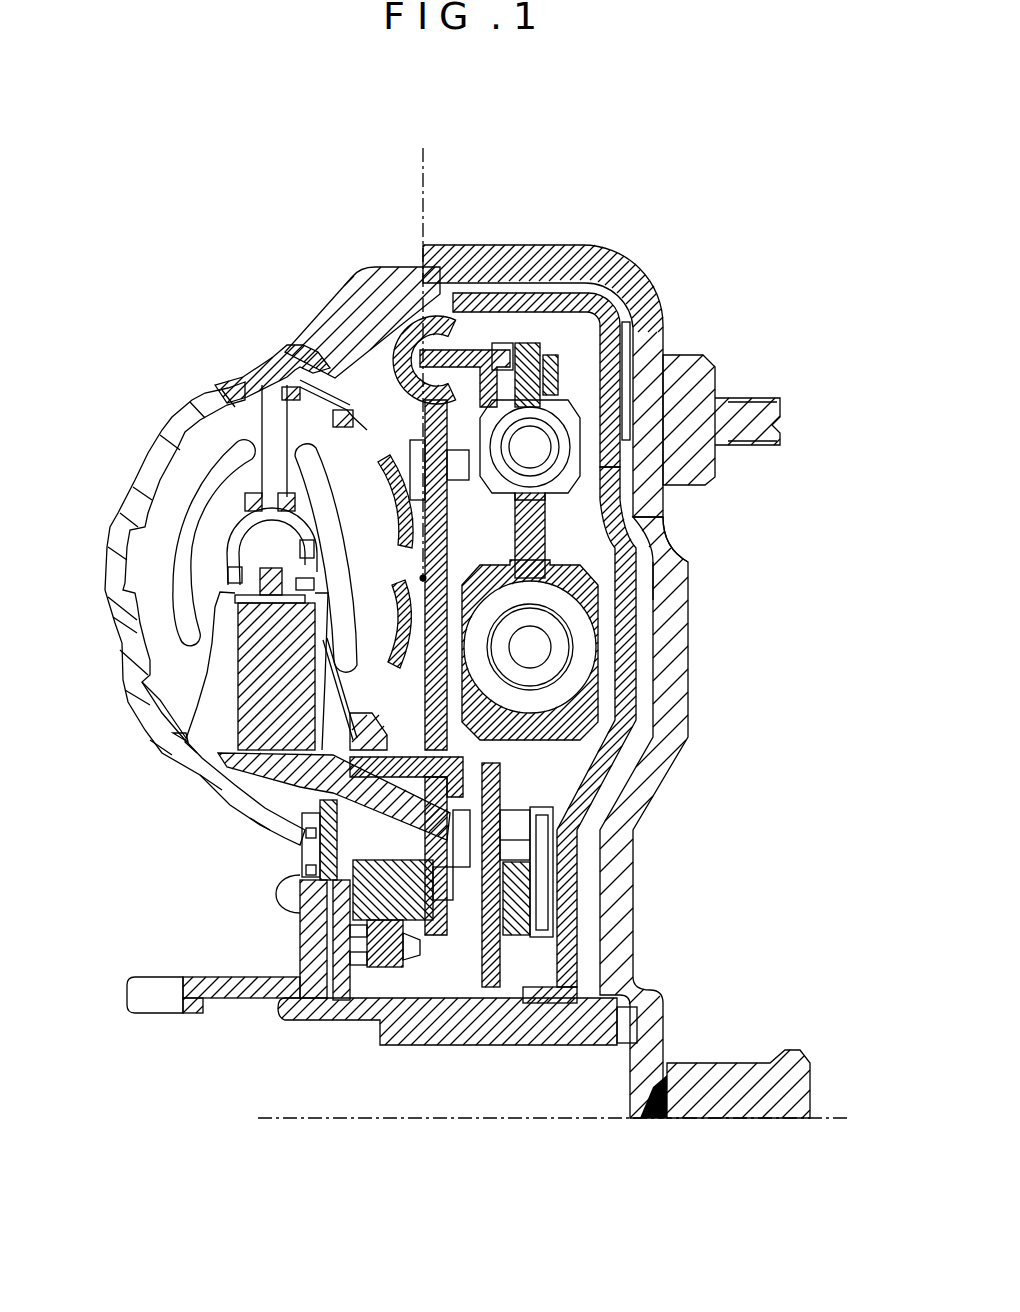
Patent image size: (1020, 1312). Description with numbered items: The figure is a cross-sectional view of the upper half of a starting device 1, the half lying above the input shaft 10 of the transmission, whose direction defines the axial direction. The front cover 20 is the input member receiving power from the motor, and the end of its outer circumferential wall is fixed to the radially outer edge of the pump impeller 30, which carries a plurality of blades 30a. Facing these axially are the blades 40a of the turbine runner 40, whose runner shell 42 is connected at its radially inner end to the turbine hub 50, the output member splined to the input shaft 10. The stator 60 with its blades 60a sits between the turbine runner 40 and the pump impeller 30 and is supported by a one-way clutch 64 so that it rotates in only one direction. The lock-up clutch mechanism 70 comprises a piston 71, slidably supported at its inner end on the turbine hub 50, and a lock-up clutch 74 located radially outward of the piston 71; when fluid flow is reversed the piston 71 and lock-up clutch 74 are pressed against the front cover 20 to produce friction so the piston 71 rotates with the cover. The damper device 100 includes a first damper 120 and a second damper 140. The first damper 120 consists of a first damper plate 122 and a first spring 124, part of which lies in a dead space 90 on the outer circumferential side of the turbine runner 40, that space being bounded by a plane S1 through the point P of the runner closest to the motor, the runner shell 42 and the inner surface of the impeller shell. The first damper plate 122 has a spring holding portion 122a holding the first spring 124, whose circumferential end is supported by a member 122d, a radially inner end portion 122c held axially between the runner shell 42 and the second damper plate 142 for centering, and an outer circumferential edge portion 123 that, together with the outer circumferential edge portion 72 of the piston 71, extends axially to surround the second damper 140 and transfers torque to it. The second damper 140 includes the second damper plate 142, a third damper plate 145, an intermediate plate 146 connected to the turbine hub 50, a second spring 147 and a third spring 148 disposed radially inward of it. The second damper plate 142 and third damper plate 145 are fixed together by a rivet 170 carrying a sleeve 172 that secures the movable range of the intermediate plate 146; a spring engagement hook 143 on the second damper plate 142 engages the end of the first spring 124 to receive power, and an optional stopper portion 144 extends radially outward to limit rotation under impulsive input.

The starting device 1 is at (167, 134).
The input shaft 10 is at (592, 1122).
The front cover 20 is at (672, 613).
The pump impeller 30 is at (115, 718).
The blades 30a is at (213, 437).
The turbine runner 40 is at (302, 420).
The blades 40a is at (265, 372).
The runner shell 42 is at (365, 838).
The turbine hub 50 is at (490, 1030).
The stator 60 is at (268, 780).
The blades 60a is at (247, 697).
The one-way clutch 64 is at (335, 943).
The lock-up clutch mechanism 70 is at (633, 313).
The piston 71 is at (626, 628).
The outer circumferential edge portion 72 is at (552, 303).
The lock-up clutch 74 is at (632, 352).
The dead space 90 is at (372, 361).
The damper device 100 is at (623, 146).
The first damper 120 is at (413, 292).
The first damper plate 122 is at (413, 508).
The spring holding portion 122a is at (326, 382).
The radially inner end portion 122c is at (530, 784).
The member 122d is at (380, 378).
The outer circumferential edge portion 123 is at (438, 342).
The first spring 124 is at (462, 342).
The second damper 140 is at (575, 370).
The second damper plate 142 is at (485, 521).
The spring engagement hook 143 is at (387, 320).
The stopper portion 144 is at (518, 318).
The third damper plate 145 is at (555, 517).
The intermediate plate 146 is at (570, 583).
The second spring 147 is at (560, 450).
The third spring 148 is at (578, 658).
The rivet 170 is at (547, 843).
The sleeve 172 is at (513, 893).
The point P is at (421, 578).
The plane S1 is at (417, 350).